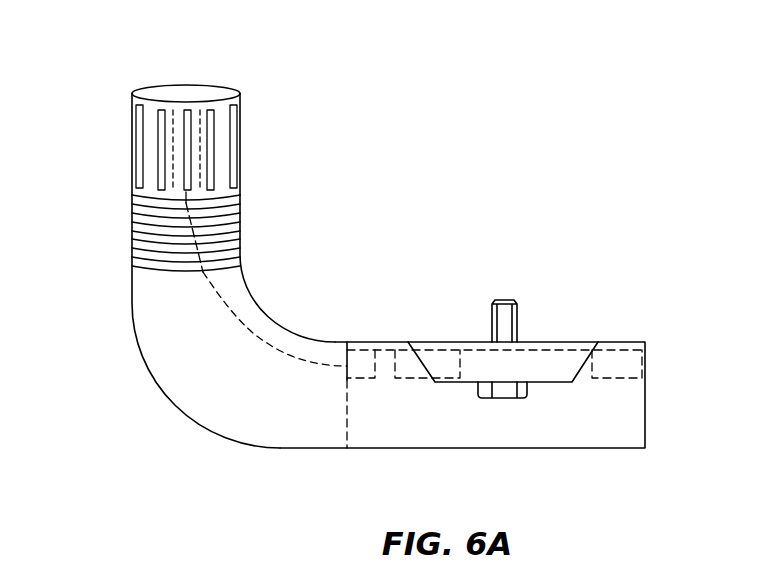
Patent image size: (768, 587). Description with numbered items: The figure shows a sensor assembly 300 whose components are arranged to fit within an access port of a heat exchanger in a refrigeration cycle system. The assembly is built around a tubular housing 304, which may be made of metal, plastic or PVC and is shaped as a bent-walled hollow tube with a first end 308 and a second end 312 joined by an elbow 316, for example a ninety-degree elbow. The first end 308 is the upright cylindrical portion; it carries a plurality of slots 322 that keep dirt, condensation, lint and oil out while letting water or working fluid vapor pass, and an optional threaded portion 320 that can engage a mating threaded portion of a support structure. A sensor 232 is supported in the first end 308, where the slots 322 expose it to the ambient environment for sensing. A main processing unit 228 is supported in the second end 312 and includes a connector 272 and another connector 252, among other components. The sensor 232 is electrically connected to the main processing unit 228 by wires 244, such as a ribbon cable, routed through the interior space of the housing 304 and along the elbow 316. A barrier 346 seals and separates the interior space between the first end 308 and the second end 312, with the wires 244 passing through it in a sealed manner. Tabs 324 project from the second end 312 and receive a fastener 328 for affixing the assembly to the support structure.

The sensor assembly 300 is at (465, 98).
The sensor 232 is at (203, 117).
The first end 308 is at (241, 97).
The slots 322 is at (138, 135).
The threaded portion 320 is at (241, 220).
The wires 244 is at (258, 328).
The housing 304 is at (311, 329).
The elbow 316 is at (177, 407).
The second end 312 is at (618, 448).
The barrier 346 is at (347, 405).
The connector 272 is at (360, 378).
The main processing unit 228 is at (387, 343).
The connector 252 is at (613, 378).
The tabs 324 is at (565, 350).
The fastener 328 is at (514, 302).